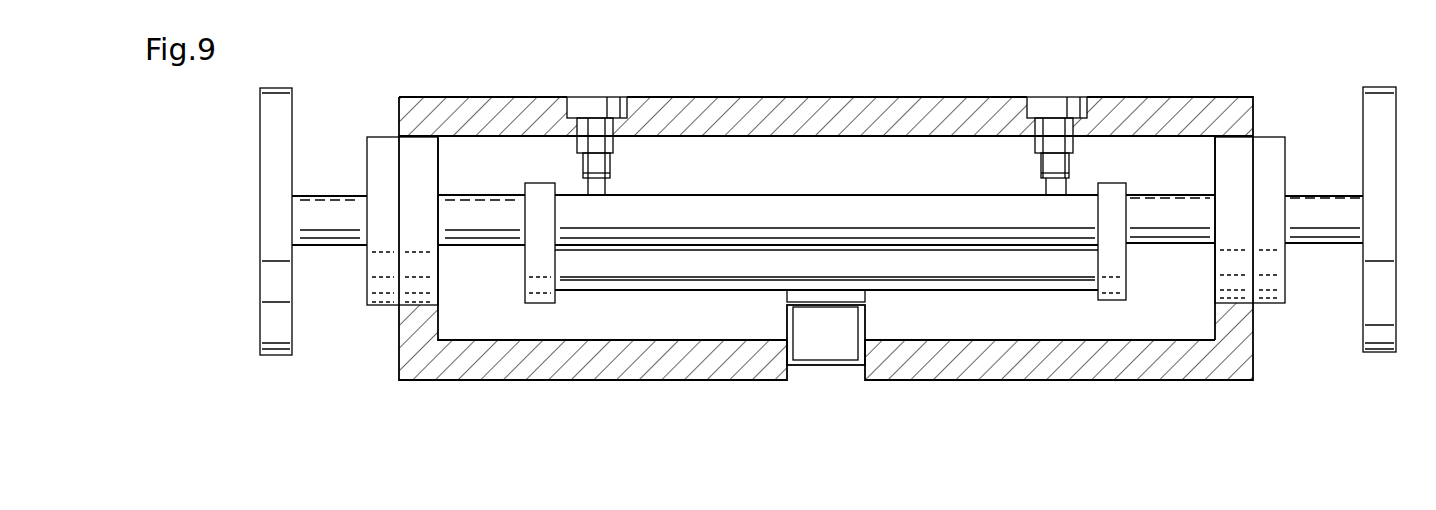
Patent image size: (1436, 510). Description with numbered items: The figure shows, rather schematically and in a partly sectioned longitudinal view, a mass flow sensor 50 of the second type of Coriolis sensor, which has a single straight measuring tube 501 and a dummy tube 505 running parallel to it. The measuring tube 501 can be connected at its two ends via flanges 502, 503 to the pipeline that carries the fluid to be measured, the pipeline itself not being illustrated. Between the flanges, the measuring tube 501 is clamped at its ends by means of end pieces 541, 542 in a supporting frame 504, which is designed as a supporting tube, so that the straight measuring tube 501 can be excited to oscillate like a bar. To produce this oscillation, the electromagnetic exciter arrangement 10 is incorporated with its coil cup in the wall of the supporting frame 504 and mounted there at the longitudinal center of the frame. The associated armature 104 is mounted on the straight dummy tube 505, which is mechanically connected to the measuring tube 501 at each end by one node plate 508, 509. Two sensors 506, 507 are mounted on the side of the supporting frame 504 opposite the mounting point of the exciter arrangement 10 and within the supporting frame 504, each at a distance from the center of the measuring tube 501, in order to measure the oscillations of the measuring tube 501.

The mass flow sensor 50 is at (823, 206).
The measuring tube 501 is at (807, 197).
The flange 502 is at (273, 95).
The flange 503 is at (1380, 97).
The supporting frame 504 is at (458, 95).
The dummy tube 505 is at (683, 280).
The sensor 506 is at (617, 102).
The sensor 507 is at (1070, 102).
The node plate 508 is at (540, 295).
The node plate 509 is at (1115, 290).
The end piece 541 is at (380, 147).
The end piece 542 is at (1268, 147).
The exciter arrangement 10 is at (843, 363).
The armature 104 is at (865, 288).